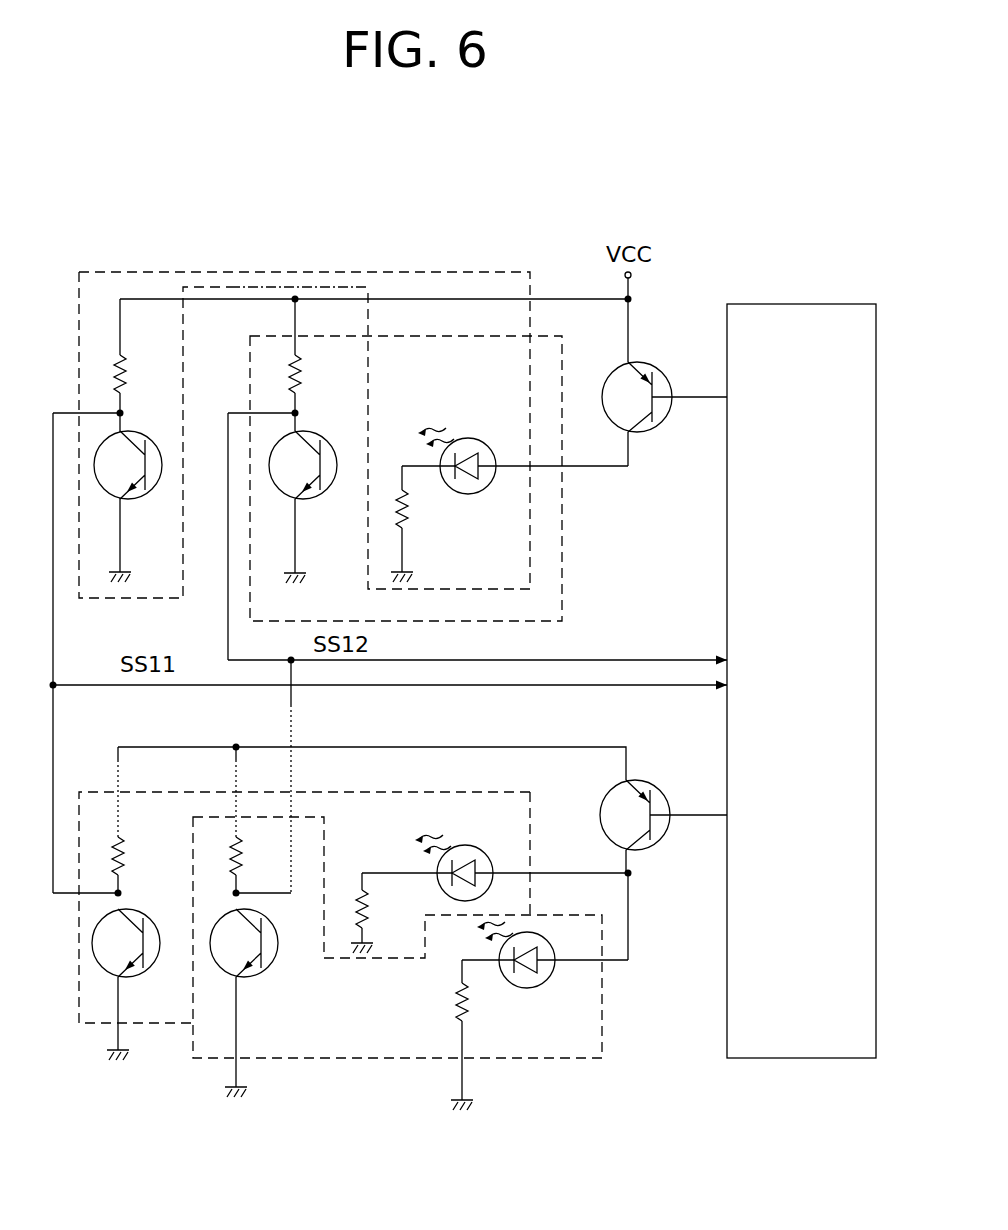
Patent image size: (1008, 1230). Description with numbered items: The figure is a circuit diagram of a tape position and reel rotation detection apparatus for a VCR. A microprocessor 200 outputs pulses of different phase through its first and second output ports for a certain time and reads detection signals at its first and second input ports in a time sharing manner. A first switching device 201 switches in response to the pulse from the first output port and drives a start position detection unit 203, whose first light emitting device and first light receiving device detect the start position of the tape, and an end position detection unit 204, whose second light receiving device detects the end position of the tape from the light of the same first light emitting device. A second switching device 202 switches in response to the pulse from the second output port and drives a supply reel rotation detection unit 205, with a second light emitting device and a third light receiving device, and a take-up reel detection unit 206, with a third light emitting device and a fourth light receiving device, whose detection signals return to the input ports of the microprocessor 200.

The microprocessor 200 is at (828, 304).
The first switching device 201 is at (662, 379).
The second switching device 202 is at (656, 845).
The start position detection unit 203 is at (400, 272).
The end position detection unit 204 is at (562, 582).
The supply reel rotation detection unit 205 is at (602, 1060).
The take-up reel detection unit 206 is at (80, 1025).